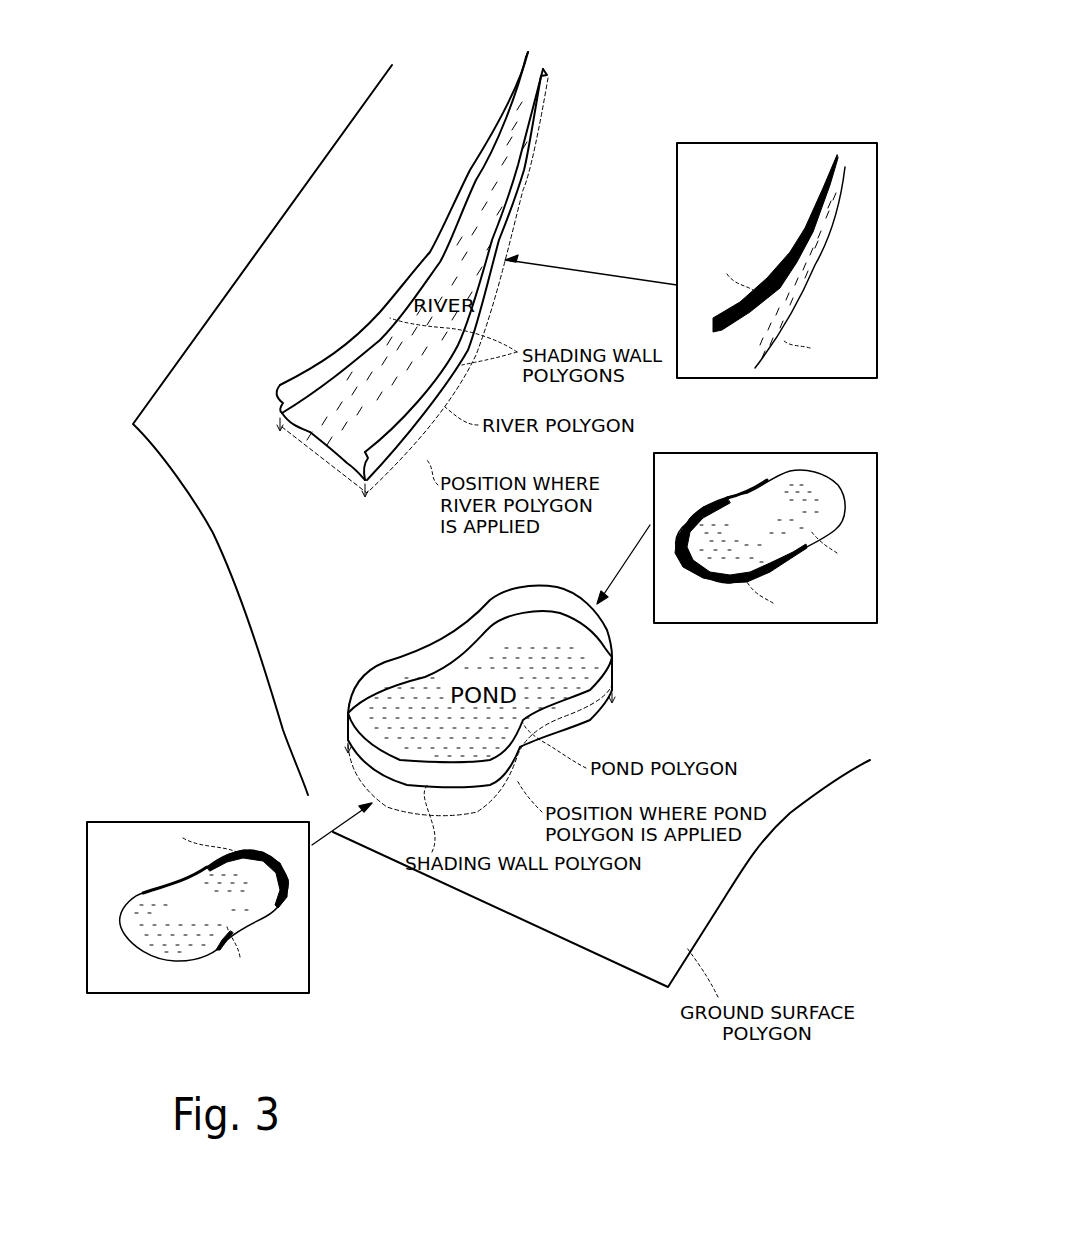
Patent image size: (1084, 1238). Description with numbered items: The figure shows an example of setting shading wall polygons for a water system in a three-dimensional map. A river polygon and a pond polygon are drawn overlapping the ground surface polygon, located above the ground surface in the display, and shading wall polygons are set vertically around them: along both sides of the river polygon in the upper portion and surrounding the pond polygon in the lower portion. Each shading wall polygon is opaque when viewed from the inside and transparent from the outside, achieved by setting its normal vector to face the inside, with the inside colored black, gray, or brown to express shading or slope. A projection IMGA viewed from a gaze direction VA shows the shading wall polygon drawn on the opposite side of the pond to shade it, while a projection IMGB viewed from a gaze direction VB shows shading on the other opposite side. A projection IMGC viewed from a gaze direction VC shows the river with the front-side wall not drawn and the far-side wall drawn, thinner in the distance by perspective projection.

The projection IMGA is at (832, 452).
The projection IMGB is at (180, 820).
The projection IMGC is at (723, 379).
The gaze direction VA is at (621, 564).
The gaze direction VB is at (342, 820).
The gaze direction VC is at (591, 279).